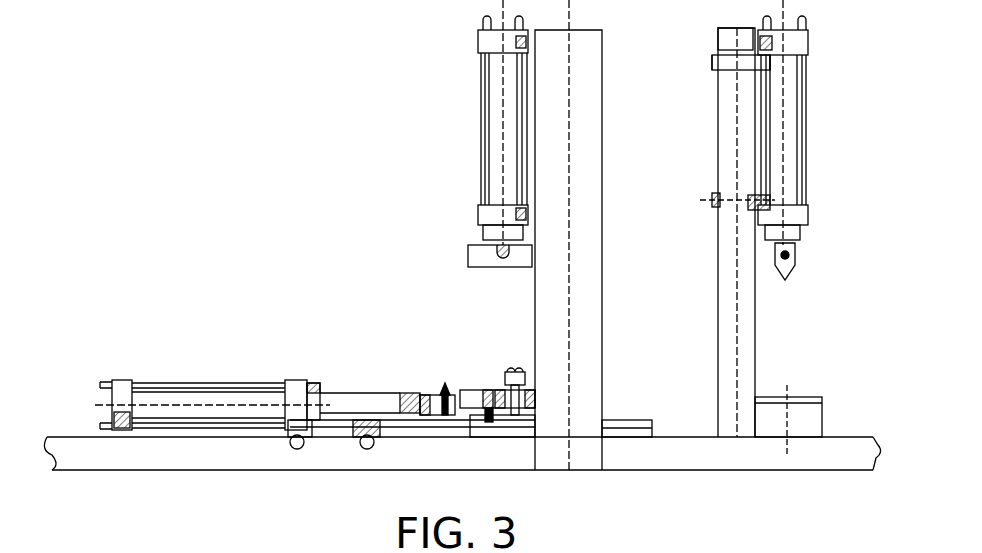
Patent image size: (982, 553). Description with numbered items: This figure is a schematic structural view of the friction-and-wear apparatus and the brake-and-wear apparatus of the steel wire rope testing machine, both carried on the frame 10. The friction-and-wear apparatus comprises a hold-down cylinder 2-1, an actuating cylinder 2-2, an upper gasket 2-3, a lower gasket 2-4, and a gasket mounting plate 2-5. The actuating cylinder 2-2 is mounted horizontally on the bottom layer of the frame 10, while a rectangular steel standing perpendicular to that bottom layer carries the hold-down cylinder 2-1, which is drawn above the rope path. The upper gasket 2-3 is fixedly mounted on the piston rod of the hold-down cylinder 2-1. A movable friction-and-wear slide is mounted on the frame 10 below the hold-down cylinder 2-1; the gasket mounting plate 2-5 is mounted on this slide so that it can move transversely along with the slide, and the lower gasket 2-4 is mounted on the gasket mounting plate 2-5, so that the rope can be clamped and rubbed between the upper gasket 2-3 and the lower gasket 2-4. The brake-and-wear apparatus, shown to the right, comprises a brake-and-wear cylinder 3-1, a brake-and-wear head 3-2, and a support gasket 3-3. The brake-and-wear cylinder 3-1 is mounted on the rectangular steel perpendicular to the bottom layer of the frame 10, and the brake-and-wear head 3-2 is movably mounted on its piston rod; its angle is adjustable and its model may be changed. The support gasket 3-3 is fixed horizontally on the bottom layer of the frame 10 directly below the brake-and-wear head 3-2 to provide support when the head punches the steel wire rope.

The frame 10 is at (88, 440).
The hold-down cylinder 2-1 is at (480, 152).
The actuating cylinder 2-2 is at (217, 381).
The upper gasket 2-3 is at (468, 248).
The lower gasket 2-4 is at (493, 392).
The gasket mounting plate 2-5 is at (470, 408).
The brake-and-wear cylinder 3-1 is at (786, 102).
The brake-and-wear head 3-2 is at (790, 275).
The support gasket 3-3 is at (800, 397).